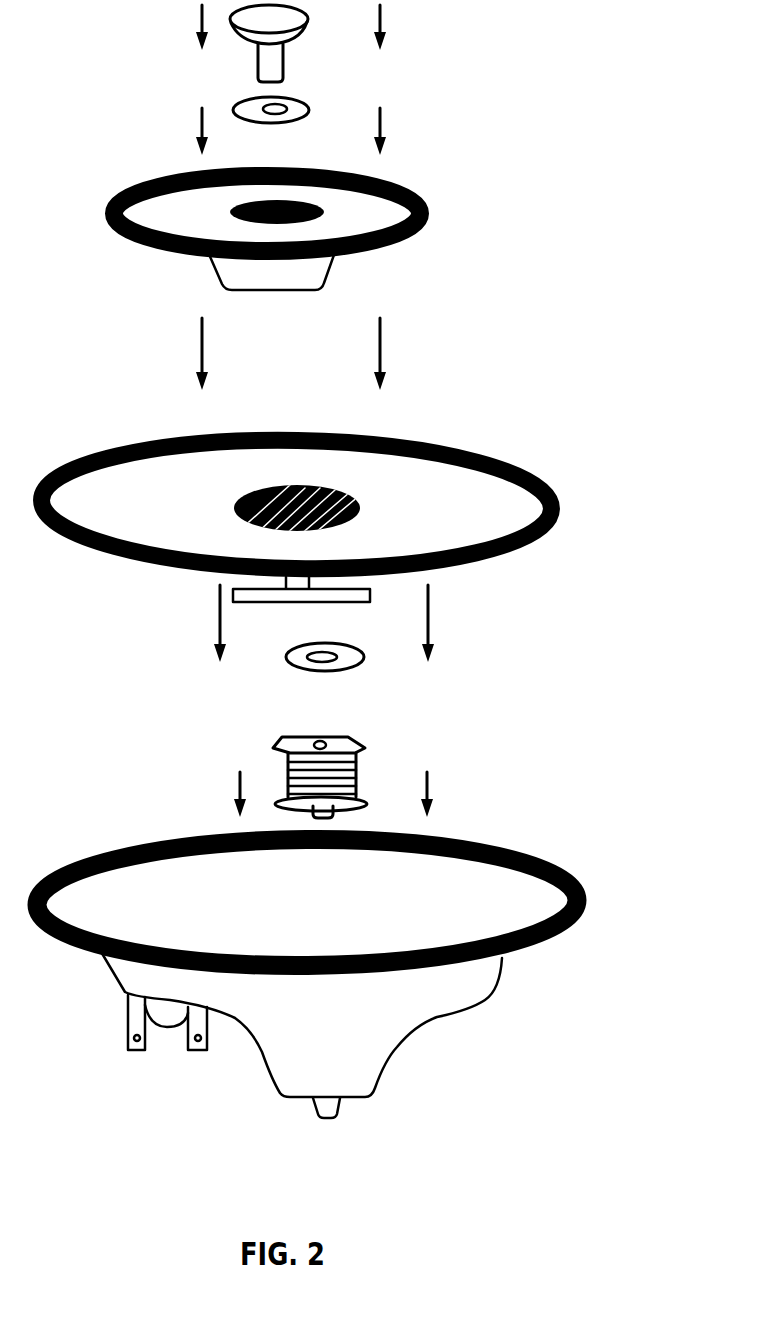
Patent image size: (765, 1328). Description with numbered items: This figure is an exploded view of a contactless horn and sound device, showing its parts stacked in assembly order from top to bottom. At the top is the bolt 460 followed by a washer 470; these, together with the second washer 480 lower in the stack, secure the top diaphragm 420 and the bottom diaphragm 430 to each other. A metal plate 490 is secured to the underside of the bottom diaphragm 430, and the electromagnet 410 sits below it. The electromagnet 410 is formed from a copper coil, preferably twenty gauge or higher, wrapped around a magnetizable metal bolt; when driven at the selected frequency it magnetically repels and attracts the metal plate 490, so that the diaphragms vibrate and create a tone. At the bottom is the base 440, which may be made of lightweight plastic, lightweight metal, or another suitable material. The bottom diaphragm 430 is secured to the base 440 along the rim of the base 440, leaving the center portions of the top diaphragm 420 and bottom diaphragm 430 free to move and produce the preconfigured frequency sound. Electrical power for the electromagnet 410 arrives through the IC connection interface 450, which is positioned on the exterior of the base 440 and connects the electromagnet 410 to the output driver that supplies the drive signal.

The electromagnet 410 is at (344, 777).
The top diaphragm 420 is at (300, 233).
The bottom diaphragm 430 is at (330, 504).
The base 440 is at (345, 977).
The IC connection interface 450 is at (140, 1029).
The bolt 460 is at (295, 43).
The washer 470 is at (297, 112).
The washer 480 is at (349, 657).
The metal plate 490 is at (323, 591).